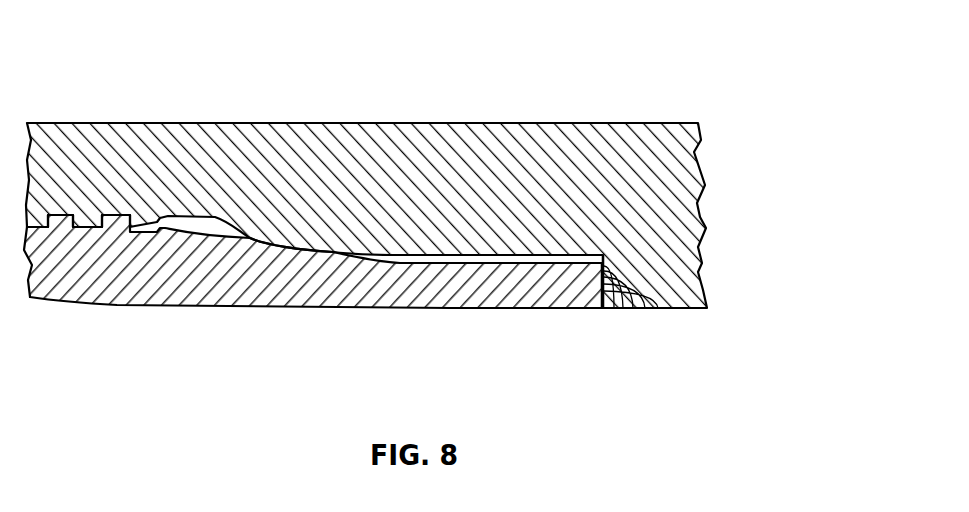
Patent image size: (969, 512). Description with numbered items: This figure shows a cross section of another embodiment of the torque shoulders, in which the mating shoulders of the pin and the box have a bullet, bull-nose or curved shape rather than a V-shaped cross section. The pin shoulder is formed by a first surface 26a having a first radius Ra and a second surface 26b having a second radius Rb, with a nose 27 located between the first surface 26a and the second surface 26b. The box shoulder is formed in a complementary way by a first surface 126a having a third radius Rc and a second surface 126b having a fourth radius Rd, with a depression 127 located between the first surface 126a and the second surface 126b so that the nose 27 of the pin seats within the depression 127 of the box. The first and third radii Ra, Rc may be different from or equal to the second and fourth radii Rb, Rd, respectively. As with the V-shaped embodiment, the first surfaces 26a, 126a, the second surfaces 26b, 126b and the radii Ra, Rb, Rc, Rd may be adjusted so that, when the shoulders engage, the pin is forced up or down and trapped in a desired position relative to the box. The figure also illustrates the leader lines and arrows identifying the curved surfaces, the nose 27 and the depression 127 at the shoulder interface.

The first radius Ra is at (603, 273).
The second radius Rb is at (598, 302).
The third radius Rc is at (612, 275).
The fourth radius Rd is at (637, 308).
The first surface 26a is at (739, 248).
The first surface 126a is at (612, 269).
The second surface 26b is at (625, 337).
The second surface 126b is at (606, 292).
The nose 27 is at (706, 323).
The depression 127 is at (662, 308).